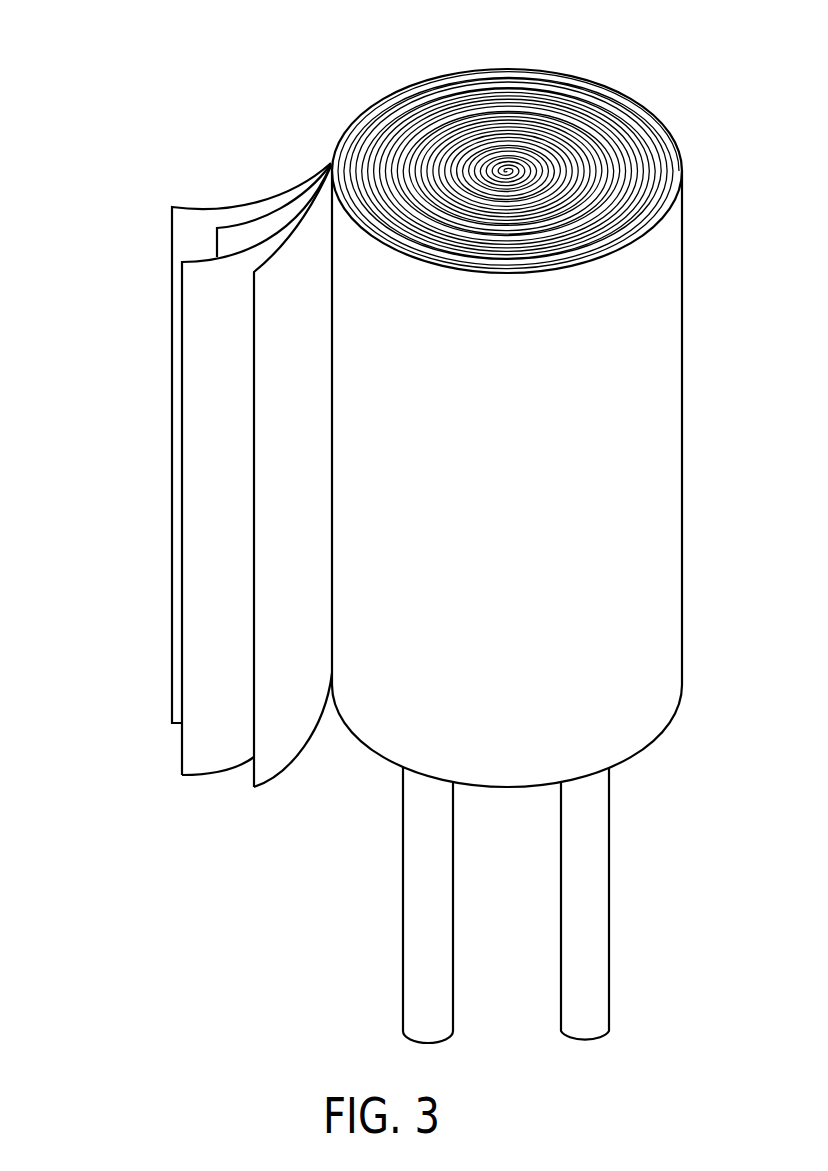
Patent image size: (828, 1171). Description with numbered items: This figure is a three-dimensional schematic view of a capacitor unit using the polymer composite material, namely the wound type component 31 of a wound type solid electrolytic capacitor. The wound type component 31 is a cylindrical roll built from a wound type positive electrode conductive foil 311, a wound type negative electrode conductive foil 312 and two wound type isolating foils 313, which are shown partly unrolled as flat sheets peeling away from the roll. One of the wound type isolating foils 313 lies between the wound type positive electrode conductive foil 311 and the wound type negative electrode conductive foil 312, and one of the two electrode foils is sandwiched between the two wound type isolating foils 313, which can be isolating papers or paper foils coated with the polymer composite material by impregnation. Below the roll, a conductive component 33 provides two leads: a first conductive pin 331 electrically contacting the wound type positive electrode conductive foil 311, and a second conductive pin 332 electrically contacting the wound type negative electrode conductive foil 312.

The wound type component 31 is at (393, 92).
The wound type positive electrode conductive foil 311 is at (235, 240).
The wound type negative electrode conductive foil 312 is at (293, 293).
The wound type isolating foils 313 is at (207, 313).
The conductive component 33 is at (431, 905).
The first conductive pin 331 is at (432, 873).
The second conductive pin 332 is at (583, 934).